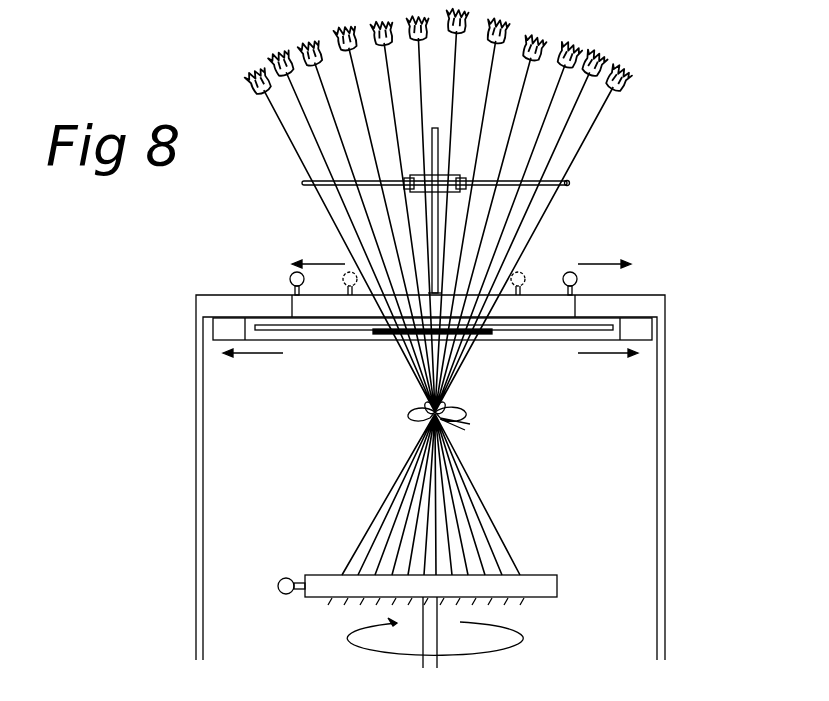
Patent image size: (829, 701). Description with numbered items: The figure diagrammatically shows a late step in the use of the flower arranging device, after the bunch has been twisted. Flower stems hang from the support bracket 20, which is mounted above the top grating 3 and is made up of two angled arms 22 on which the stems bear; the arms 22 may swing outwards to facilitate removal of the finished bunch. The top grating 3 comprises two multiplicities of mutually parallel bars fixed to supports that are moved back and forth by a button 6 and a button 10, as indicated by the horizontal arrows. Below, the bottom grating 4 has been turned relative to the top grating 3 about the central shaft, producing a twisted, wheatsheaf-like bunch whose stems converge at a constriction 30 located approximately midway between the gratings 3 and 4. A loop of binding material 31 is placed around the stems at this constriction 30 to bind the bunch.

The top grating 3 is at (343, 345).
The bottom grating 4 is at (557, 584).
The button 6 is at (577, 279).
The button 10 is at (290, 279).
The support bracket 20 is at (573, 182).
The angled arms 22 is at (569, 185).
The constriction 30 is at (430, 412).
The binding material 31 is at (450, 411).